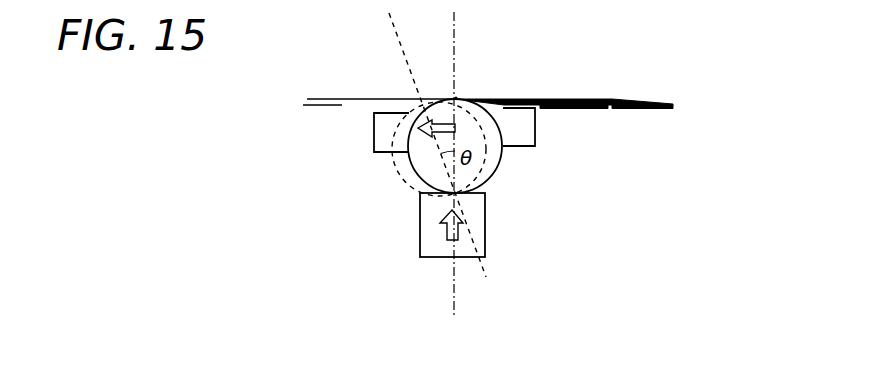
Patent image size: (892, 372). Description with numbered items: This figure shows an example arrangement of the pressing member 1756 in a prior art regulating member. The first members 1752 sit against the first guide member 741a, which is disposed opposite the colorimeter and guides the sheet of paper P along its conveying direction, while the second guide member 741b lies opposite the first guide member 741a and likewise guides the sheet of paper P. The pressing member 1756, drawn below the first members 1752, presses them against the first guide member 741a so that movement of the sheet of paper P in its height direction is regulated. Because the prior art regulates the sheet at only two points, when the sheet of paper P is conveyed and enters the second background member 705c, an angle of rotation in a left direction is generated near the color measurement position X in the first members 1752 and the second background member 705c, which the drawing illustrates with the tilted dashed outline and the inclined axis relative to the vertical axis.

The first members 1752 is at (421, 151).
The second background member 705c is at (522, 137).
The pressing member 1756 is at (433, 234).
The first guide member 741a is at (557, 100).
The second guide member 741b is at (597, 108).
The sheet of paper P is at (654, 102).
The color measurement position X is at (459, 95).